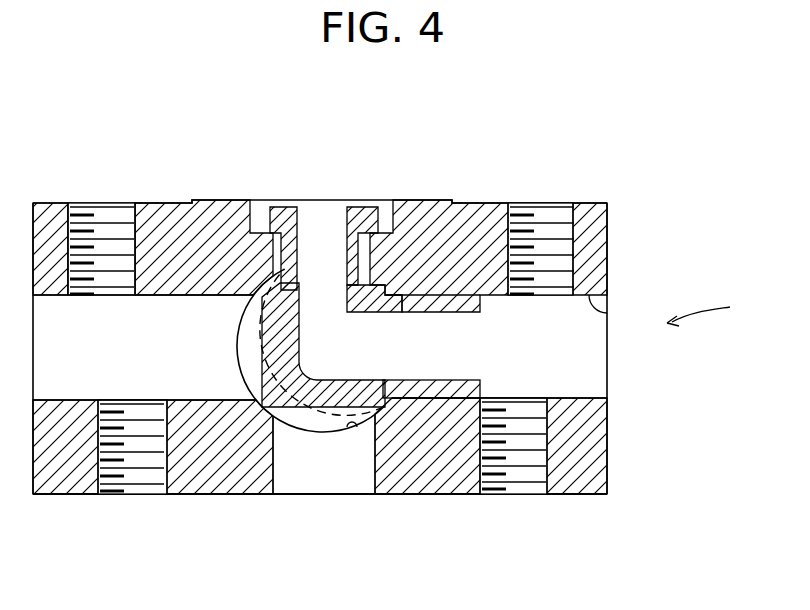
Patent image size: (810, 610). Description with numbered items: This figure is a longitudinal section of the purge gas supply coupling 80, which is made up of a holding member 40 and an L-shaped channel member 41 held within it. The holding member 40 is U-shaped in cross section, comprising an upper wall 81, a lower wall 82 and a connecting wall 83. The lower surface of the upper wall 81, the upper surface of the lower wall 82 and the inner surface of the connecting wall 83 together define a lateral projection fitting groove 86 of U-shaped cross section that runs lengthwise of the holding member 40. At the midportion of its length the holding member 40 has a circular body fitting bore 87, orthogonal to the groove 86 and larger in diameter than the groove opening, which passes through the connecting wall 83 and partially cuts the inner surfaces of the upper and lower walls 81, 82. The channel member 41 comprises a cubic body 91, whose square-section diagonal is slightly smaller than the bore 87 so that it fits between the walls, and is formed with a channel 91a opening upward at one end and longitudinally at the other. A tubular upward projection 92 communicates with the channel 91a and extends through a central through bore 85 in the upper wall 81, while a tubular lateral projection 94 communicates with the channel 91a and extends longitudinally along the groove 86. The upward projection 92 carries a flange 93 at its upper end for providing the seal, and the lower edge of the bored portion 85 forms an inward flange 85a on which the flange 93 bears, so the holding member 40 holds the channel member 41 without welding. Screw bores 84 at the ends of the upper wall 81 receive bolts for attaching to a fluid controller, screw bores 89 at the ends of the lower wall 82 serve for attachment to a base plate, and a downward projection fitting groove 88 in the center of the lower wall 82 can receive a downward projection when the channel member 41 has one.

The holding member 40 is at (610, 478).
The L-shaped channel member 41 is at (318, 432).
The purge gas supply coupling 80 is at (722, 314).
The upper wall 81 is at (607, 232).
The lower wall 82 is at (588, 442).
The connecting wall 83 is at (580, 357).
The screw bore 84 is at (133, 223).
The through bore 85 is at (265, 205).
The inward flange 85a is at (386, 212).
The lateral projection fitting groove 86 is at (607, 307).
The body fitting bore 87 is at (360, 425).
The downward projection fitting groove 88 is at (273, 468).
The screw bore 89 is at (548, 463).
The cubic body 91 is at (313, 327).
The channel 91a is at (277, 372).
The tubular upward projection 92 is at (332, 213).
The flange 93 is at (285, 213).
The tubular lateral projection 94 is at (447, 400).